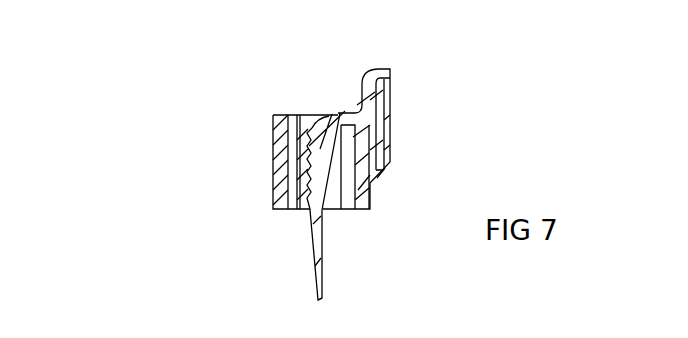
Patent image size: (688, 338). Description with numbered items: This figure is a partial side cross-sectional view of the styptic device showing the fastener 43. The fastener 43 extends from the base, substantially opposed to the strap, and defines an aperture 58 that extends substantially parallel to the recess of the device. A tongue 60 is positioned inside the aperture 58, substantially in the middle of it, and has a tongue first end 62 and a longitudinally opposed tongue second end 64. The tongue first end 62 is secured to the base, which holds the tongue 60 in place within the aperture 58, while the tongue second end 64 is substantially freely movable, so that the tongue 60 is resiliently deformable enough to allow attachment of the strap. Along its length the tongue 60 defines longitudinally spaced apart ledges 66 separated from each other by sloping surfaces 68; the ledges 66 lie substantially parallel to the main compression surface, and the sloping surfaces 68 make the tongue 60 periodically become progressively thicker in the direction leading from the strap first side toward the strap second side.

The fastener 43 is at (484, 144).
The aperture 58 is at (295, 115).
The tongue 60 is at (337, 297).
The tongue first end 62 is at (338, 116).
The tongue second end 64 is at (317, 301).
The ledges 66 is at (307, 190).
The sloping surfaces 68 is at (302, 175).